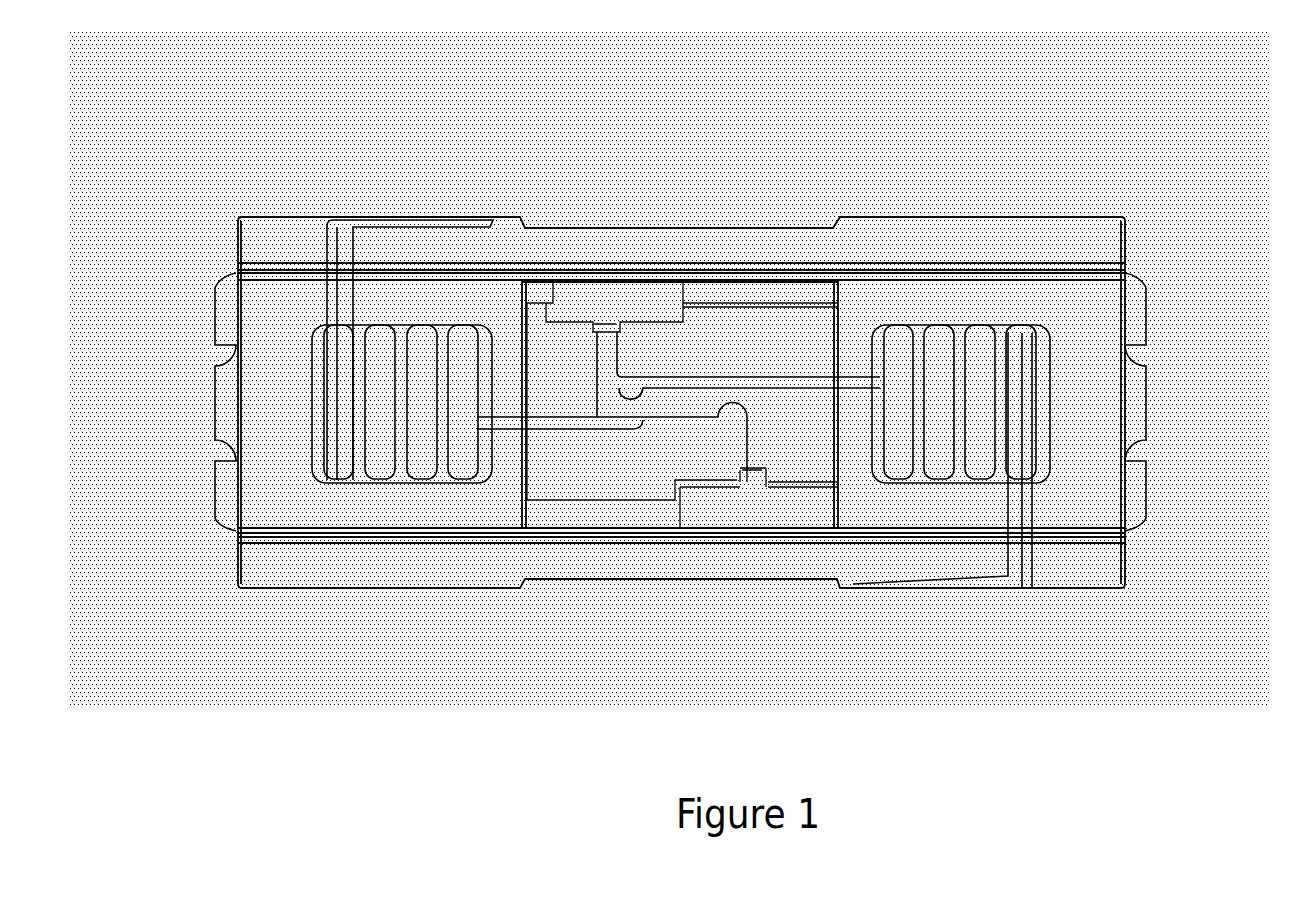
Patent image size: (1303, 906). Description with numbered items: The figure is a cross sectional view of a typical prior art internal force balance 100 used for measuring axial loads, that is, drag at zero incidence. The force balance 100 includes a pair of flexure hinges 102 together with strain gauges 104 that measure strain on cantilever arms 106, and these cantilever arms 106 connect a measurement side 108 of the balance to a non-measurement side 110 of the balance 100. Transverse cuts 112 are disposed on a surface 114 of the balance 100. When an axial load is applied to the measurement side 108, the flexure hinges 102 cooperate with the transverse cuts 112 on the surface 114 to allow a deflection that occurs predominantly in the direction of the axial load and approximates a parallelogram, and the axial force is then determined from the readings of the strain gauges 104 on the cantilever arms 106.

The internal force balance 100 is at (292, 136).
The flexure hinges 102 is at (422, 323).
The strain gauges 104 is at (608, 324).
The cantilever arms 106 is at (607, 335).
The measurement side 108 is at (218, 254).
The non-measurement side 110 is at (1147, 252).
The transverse cuts 112 is at (372, 216).
The surface 114 is at (447, 216).